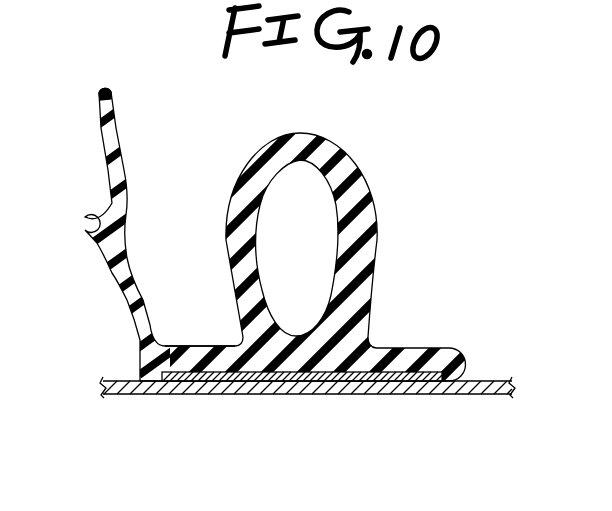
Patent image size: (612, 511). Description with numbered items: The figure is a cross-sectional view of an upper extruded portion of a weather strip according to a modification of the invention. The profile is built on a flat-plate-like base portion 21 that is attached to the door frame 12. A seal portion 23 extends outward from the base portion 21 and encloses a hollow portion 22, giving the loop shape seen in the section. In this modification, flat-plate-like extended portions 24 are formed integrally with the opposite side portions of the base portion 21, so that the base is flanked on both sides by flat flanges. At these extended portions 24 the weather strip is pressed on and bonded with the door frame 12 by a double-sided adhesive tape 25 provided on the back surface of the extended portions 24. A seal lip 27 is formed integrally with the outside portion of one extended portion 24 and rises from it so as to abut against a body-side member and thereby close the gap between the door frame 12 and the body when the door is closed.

The door frame 12 is at (490, 381).
The flat-plate-like base portion 21 is at (303, 358).
The hollow portion 22 is at (279, 184).
The seal portion 23 is at (369, 187).
The flat-plate-like extended portion 24 is at (193, 345).
The double-sided adhesive tape 25 is at (233, 388).
The seal lip 27 is at (119, 122).